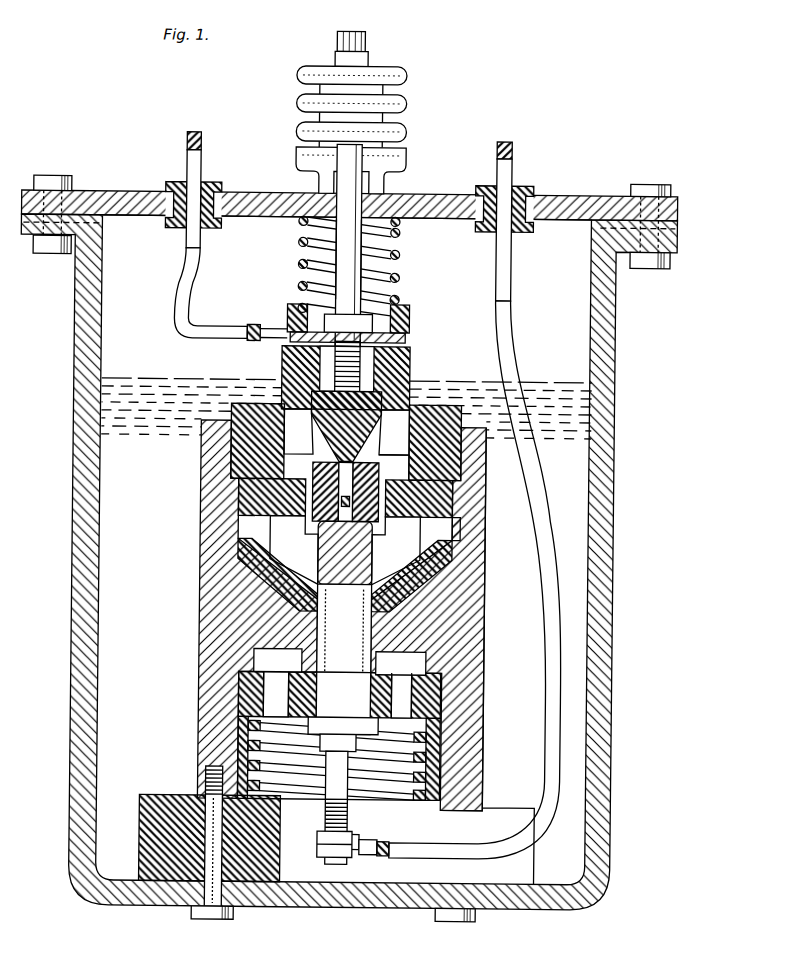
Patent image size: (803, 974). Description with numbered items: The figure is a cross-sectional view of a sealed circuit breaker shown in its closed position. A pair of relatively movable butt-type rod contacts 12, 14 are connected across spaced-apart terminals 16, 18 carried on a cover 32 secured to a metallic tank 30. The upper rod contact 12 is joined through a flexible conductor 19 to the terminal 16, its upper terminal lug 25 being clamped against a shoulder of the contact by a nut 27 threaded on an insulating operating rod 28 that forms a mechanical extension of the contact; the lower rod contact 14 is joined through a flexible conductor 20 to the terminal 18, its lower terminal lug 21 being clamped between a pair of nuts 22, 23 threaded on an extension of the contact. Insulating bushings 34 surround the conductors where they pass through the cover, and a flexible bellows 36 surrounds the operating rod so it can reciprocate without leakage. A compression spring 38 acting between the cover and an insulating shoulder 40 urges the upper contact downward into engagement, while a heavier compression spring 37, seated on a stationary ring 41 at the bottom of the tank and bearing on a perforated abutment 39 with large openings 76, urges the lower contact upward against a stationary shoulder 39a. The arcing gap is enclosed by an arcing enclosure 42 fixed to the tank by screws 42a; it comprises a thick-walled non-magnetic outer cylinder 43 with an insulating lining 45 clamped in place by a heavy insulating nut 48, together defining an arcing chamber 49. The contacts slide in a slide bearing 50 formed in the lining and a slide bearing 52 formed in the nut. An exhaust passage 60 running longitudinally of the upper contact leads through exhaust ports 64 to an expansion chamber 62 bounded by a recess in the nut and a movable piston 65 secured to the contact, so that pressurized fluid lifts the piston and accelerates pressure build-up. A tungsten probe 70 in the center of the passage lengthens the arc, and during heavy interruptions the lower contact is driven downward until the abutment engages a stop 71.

The upper rod contact 12 is at (312, 508).
The lower rod contact 14 is at (370, 546).
The terminal 16 is at (183, 140).
The terminal 18 is at (508, 148).
The flexible conductor 19 is at (175, 296).
The flexible conductor 20 is at (512, 340).
The lower terminal lug 21 is at (372, 856).
The nut 22 is at (358, 836).
The nut 23 is at (322, 848).
The upper terminal lug 25 is at (258, 330).
The nut 27 is at (343, 320).
The insulating operating rod 28 is at (338, 260).
The metallic tank 30 is at (613, 563).
The cover 32 is at (432, 194).
The insulating bushings 34 is at (210, 184).
The flexible bellows 36 is at (397, 80).
The compression spring 37 is at (310, 790).
The compression spring 38 is at (396, 258).
The perforated abutment 39 is at (252, 697).
The stationary shoulder 39a is at (278, 660).
The shoulder 40 is at (405, 328).
The stationary ring 41 is at (172, 800).
The arcing enclosure 42 is at (490, 642).
The screws 42a is at (210, 918).
The outer cylinder 43 is at (483, 612).
The insulating lining 45 is at (448, 536).
The insulating nut 48 is at (440, 425).
The arcing chamber 49 is at (278, 545).
The slide bearing 50 is at (372, 627).
The slide bearing 52 is at (385, 460).
The exhaust passage 60 is at (346, 491).
The expansion chamber 62 is at (290, 410).
The exhaust ports 64 is at (318, 446).
The movable piston 65 is at (408, 366).
The probe 70 is at (345, 553).
The stop 71 is at (441, 762).
The openings 76 is at (292, 690).